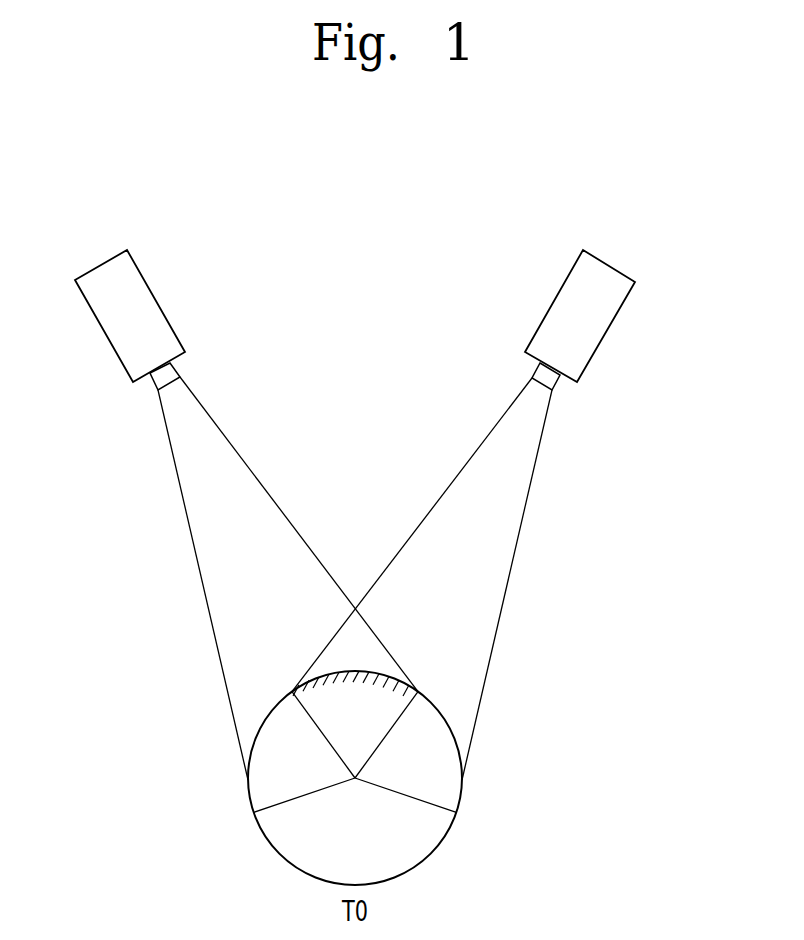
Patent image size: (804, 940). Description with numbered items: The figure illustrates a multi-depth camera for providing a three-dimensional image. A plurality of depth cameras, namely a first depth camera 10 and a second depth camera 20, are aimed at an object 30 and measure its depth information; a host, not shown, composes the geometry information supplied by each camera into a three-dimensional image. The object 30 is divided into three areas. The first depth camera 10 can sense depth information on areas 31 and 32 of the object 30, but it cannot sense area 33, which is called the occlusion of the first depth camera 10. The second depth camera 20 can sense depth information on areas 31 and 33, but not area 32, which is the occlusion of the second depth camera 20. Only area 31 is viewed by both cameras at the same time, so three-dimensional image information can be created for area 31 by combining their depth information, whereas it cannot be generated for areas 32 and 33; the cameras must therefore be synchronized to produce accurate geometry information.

The first depth camera 10 is at (100, 262).
The second depth camera 20 is at (610, 262).
The object 30 is at (448, 830).
The area 31 is at (368, 729).
The area 32 is at (305, 773).
The area 33 is at (431, 773).